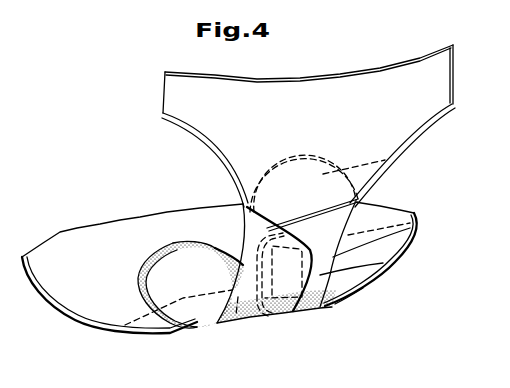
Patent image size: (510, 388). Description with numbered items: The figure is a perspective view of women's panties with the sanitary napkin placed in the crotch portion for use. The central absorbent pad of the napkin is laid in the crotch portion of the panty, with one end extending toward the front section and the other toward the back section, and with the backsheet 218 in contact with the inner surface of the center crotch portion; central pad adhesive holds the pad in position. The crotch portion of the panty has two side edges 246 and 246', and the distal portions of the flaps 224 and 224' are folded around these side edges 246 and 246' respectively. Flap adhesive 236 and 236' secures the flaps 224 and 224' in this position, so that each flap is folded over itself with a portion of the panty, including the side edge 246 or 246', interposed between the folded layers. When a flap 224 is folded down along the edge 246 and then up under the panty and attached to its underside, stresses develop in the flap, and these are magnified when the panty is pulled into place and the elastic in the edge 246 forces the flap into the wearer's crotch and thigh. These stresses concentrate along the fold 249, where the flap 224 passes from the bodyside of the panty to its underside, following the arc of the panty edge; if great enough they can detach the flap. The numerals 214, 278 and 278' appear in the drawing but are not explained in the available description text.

The front panel 214 is at (177, 262).
The backsheet 218 is at (393, 158).
The flap 224 is at (230, 285).
The flap 224' is at (360, 241).
The flap adhesive 236 is at (334, 297).
The flap adhesive 236' is at (284, 284).
The side edge 246 is at (109, 311).
The side edge 246' is at (400, 259).
The fold 249 is at (383, 263).
The hem edge 278 is at (374, 299).
The hem edge 278' is at (261, 331).